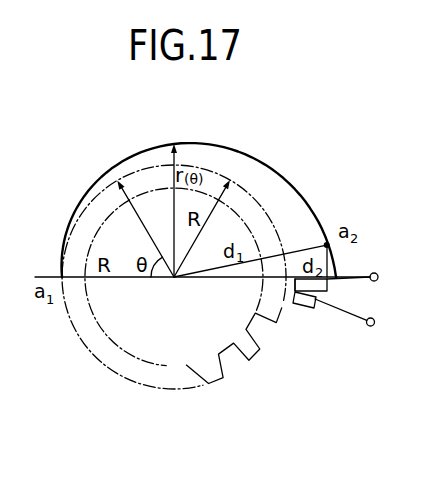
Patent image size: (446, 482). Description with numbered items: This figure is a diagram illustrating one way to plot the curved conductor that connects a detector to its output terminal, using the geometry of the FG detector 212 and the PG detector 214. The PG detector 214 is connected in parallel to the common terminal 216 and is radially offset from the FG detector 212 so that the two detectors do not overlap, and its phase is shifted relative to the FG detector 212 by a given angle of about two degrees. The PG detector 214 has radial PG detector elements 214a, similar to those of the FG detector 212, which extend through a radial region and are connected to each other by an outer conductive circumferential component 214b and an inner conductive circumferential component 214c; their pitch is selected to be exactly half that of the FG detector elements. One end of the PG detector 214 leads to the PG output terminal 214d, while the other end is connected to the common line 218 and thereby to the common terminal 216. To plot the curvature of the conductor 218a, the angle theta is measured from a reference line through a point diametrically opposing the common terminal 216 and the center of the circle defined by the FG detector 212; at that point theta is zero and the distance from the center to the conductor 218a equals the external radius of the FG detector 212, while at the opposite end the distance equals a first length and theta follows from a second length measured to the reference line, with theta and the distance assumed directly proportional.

The FG detector 212 is at (242, 374).
The PG detector 214 is at (353, 301).
The radial PG detector elements 214a is at (308, 305).
The outer conductive circumferential component 214b is at (327, 291).
The inner conductive circumferential component 214c is at (295, 281).
The PG output terminal 214d is at (370, 326).
The common terminal 216 is at (378, 275).
The common line 218 is at (353, 277).
The conductor 218a is at (274, 166).